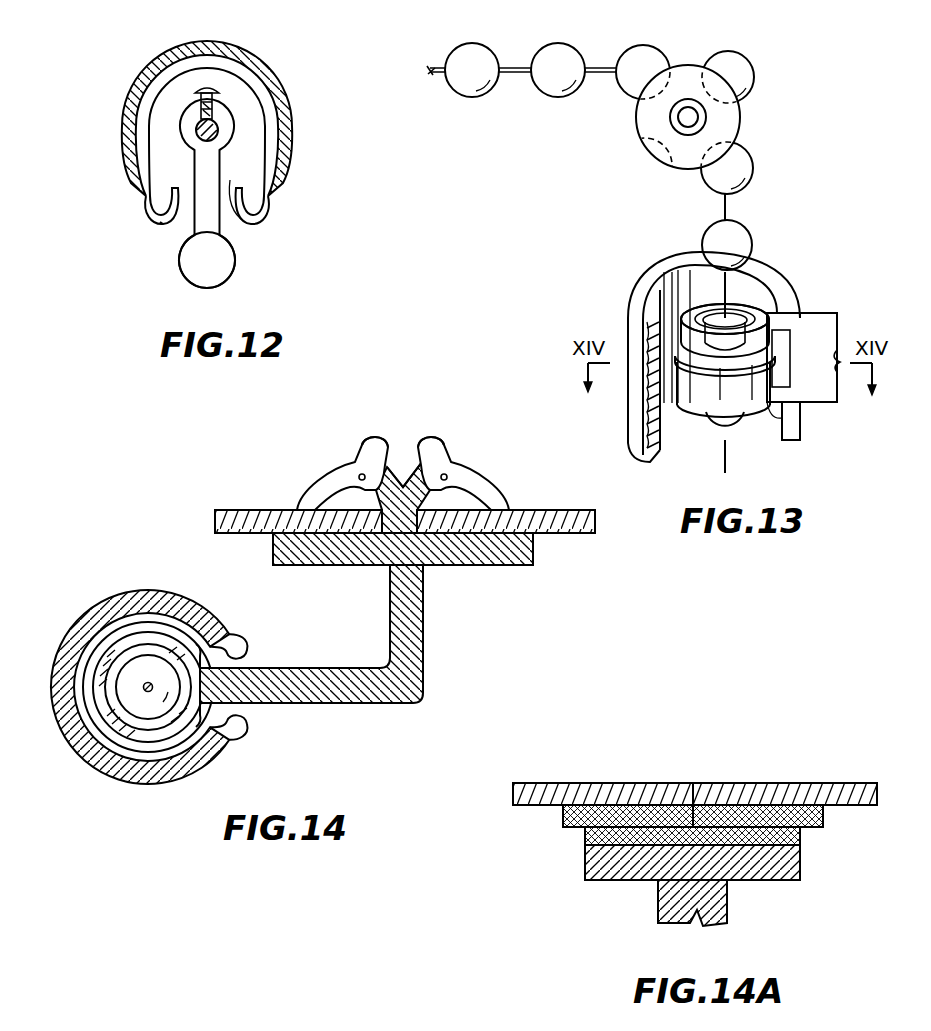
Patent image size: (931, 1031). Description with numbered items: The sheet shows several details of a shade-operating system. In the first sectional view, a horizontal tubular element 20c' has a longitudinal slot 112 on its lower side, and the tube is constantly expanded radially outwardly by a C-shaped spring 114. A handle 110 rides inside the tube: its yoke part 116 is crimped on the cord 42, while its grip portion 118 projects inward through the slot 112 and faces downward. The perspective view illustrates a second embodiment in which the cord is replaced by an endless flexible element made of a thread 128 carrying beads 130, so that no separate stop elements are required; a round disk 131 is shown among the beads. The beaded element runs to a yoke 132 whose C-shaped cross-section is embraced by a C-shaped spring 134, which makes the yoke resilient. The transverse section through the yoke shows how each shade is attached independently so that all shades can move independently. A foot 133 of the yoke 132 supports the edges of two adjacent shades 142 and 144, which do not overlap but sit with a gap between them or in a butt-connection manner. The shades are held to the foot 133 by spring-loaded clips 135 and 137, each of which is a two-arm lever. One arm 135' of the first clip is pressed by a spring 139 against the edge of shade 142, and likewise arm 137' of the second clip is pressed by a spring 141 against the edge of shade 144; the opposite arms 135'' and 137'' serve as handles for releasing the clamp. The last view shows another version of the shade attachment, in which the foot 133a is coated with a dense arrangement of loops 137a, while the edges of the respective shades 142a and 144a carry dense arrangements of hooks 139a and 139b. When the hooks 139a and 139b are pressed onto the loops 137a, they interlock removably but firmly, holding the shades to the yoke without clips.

In FIG. 12, the cord 42 is at (203, 123).
In FIG. 12, the yoke part 116 is at (187, 127).
In FIG. 12, the C-shaped spring 114 is at (133, 150).
In FIG. 12, the handle 110 is at (155, 232).
In FIG. 12, the longitudinal slot 112 is at (223, 202).
In FIG. 12, the grip portion 118 is at (215, 263).
In FIG. 12, the horizontal tubular element 20c' is at (239, 118).
In FIG. 13, the thread 128 is at (607, 72).
In FIG. 14, the thread 128 is at (146, 692).
In FIG. 13, the beads 130 is at (650, 50).
In FIG. 14, the beads 130 is at (123, 652).
In FIG. 13, the disk 131 is at (735, 120).
In FIG. 13, the yoke 132 is at (753, 307).
In FIG. 14, the yoke 132 is at (151, 739).
In FIG. 13, the C-shaped spring 134 is at (692, 390).
In FIG. 14, the C-shaped spring 134 is at (151, 632).
In FIG. 14, the foot 133 is at (467, 560).
In FIG. 14, the spring-loaded clip 135 is at (325, 473).
In FIG. 14, the arm 135' is at (261, 474).
In FIG. 14, the opposite arm 135'' is at (346, 432).
In FIG. 14, the spring-loaded clip 137 is at (490, 473).
In FIG. 14, the arm 137' is at (554, 488).
In FIG. 14, the opposite arm 137'' is at (474, 442).
In FIG. 14, the spring 139 is at (393, 466).
In FIG. 14, the spring 141 is at (421, 455).
In FIG. 14, the shade 142 is at (265, 510).
In FIG. 14, the shade 144 is at (557, 533).
In FIG. 14A, the shade 142a is at (643, 797).
In FIG. 14A, the shade 144a is at (727, 793).
In FIG. 14A, the hooks 139a is at (570, 820).
In FIG. 14A, the hooks 139b is at (817, 822).
In FIG. 14A, the loops 137a is at (587, 837).
In FIG. 14A, the base block 133a is at (642, 863).